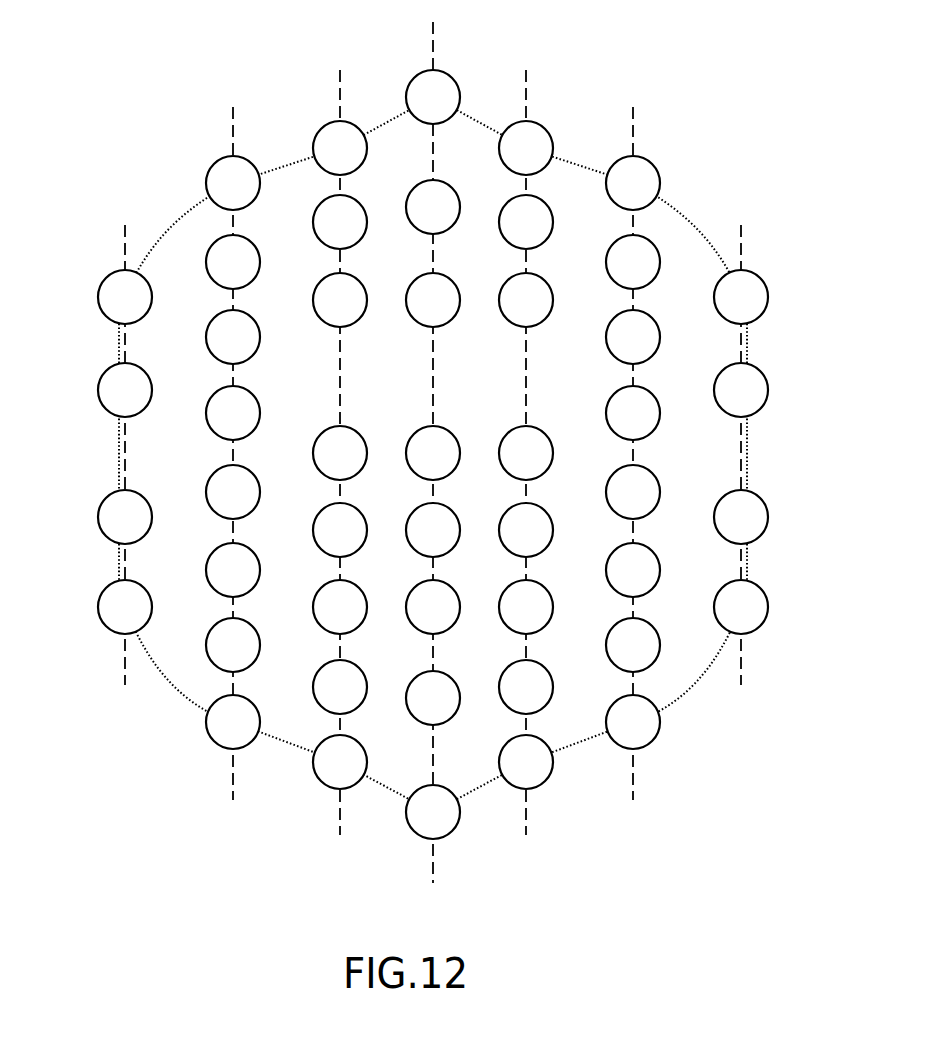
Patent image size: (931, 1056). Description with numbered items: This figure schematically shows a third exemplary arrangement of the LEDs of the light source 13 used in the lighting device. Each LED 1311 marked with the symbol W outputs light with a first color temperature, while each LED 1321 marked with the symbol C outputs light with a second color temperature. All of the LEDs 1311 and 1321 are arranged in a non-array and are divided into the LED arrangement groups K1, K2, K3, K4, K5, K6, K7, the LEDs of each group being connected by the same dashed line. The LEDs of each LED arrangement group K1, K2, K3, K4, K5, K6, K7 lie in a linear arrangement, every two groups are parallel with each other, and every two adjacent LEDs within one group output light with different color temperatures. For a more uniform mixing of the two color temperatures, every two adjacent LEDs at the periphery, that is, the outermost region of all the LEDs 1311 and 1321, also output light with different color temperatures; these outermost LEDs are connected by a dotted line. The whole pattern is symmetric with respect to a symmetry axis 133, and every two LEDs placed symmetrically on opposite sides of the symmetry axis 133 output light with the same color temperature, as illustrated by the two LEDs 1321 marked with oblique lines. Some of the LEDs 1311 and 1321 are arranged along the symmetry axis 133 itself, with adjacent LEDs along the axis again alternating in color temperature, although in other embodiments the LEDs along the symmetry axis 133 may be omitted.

The light source 13 is at (711, 67).
The symmetry axis 133 is at (435, 33).
The LED 1311 is at (117, 280).
The LED 1321 is at (113, 378).
The LED arrangement group K1 is at (92, 476).
The LED arrangement group K2 is at (233, 780).
The LED arrangement group K3 is at (340, 815).
The LED arrangement group K4 is at (446, 462).
The LED arrangement group K5 is at (527, 813).
The LED arrangement group K6 is at (634, 782).
The LED arrangement group K7 is at (742, 667).